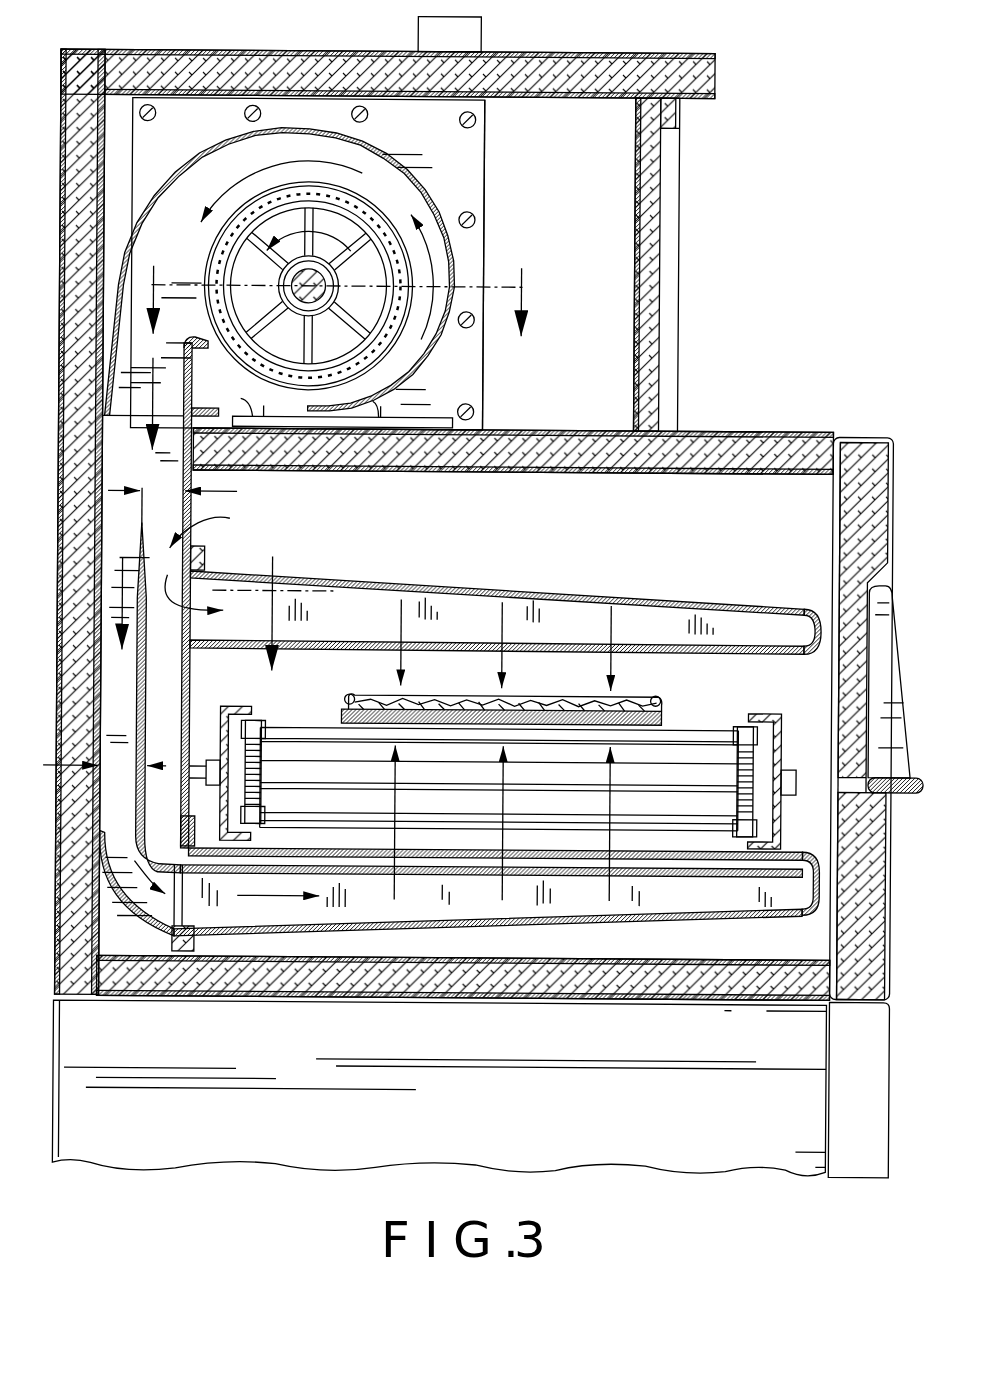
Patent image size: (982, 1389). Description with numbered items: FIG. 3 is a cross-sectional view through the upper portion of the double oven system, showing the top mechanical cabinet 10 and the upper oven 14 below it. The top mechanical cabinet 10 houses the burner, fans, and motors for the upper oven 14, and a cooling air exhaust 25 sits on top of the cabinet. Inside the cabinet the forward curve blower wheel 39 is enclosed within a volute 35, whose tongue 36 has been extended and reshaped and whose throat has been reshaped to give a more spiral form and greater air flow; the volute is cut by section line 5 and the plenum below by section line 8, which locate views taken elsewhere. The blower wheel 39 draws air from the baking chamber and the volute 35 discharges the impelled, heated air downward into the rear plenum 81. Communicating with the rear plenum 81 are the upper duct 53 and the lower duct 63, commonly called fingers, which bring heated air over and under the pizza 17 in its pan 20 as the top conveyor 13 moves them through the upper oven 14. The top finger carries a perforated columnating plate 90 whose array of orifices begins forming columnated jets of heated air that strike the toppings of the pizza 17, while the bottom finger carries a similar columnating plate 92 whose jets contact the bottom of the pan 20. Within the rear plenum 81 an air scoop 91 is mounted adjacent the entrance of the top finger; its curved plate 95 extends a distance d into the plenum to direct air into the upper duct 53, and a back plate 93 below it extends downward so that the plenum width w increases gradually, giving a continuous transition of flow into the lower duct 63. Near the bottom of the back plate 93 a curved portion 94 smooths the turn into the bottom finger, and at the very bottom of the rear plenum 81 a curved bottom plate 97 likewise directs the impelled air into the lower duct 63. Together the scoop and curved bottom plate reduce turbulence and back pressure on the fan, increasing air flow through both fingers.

The section line 5- 5 is at (336, 287).
The section line 8- 8 is at (223, 598).
The top mechanical cabinet 10 is at (673, 245).
The top conveyor 13 is at (697, 730).
The upper oven 14 is at (860, 450).
The pizza 17 is at (395, 697).
The pan 20 is at (352, 720).
The cooling air exhaust 25 is at (463, 33).
The volute 35 is at (420, 190).
The tongue 36 is at (462, 385).
The forward curve blower wheel 39 is at (303, 187).
The upper duct 53 is at (675, 598).
The lower duct 63 is at (640, 922).
The rear plenum 81 is at (143, 470).
The columnating plate 90 is at (628, 622).
The air scoop 91 is at (217, 526).
The columnating plate 92 is at (637, 880).
The back plate 93 is at (140, 683).
The curved portion 94 is at (127, 845).
The curved plate 95 is at (165, 622).
The curved bottom plate 97 is at (128, 887).